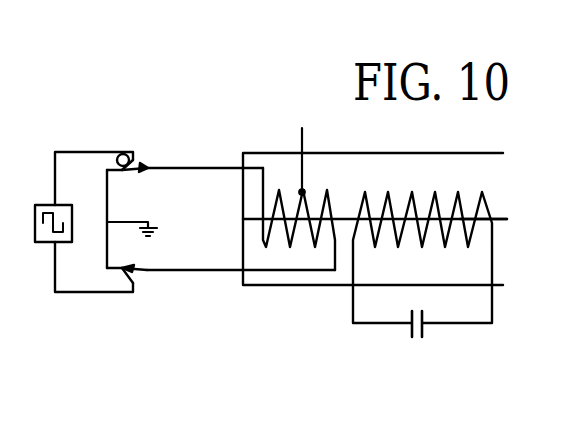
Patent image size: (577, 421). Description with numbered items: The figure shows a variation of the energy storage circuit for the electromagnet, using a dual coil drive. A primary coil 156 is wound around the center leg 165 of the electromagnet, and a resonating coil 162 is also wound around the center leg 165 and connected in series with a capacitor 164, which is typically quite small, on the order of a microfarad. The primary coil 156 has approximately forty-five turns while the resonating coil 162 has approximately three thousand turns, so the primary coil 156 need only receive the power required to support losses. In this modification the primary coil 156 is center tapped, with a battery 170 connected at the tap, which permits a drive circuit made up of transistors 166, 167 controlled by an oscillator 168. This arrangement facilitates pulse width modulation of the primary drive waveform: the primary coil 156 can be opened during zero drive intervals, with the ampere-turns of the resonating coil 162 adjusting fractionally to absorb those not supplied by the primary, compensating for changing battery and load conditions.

The primary coil 156 is at (327, 190).
The resonating coil 162 is at (412, 190).
The capacitor 164 is at (423, 336).
The center leg 165 is at (498, 218).
The transistor 166 is at (121, 276).
The transistor 167 is at (118, 157).
The oscillator 168 is at (43, 203).
The battery 170 is at (301, 105).